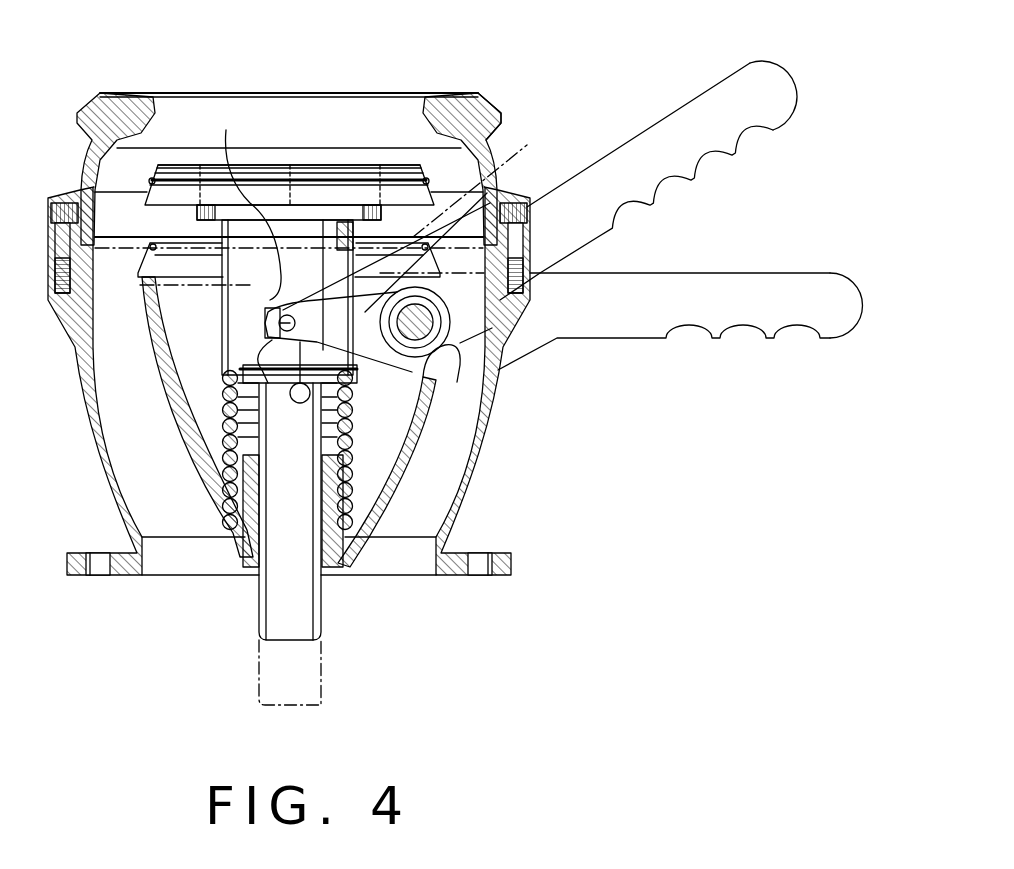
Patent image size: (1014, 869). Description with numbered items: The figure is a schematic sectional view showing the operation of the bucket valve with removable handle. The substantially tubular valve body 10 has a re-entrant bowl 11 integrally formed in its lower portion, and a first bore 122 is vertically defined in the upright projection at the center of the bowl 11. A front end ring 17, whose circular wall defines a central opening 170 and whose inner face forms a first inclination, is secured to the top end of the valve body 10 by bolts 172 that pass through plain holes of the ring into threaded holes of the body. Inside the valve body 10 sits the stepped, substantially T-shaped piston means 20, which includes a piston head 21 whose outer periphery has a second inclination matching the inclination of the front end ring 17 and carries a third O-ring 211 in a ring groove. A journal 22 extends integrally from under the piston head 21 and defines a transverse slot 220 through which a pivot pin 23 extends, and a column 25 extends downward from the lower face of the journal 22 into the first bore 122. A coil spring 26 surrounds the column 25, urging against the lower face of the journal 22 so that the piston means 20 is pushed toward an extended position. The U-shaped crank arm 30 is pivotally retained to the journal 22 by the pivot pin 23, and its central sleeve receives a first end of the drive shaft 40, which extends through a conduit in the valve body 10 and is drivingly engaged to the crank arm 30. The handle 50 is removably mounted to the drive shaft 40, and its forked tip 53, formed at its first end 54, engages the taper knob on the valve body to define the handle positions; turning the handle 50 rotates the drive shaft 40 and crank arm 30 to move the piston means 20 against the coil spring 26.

The valve body 10 is at (465, 500).
The re-entrant bowl 11 is at (372, 520).
The first bore 122 is at (338, 558).
The front end ring 17 is at (490, 112).
The opening 170 is at (412, 112).
The bolts 172 is at (62, 210).
The piston means 20 is at (360, 166).
The piston head 21 is at (291, 186).
The third O-ring 211 is at (171, 172).
The journal 22 is at (153, 277).
The transverse slot 220 is at (270, 312).
The pivot pin 23 is at (260, 345).
The column 25 is at (268, 588).
The coil spring 26 is at (353, 465).
The crank arm 30 is at (427, 378).
The drive shaft 40 is at (427, 380).
The handle 50 is at (668, 132).
The forked tip 53 is at (369, 199).
The first end 54 is at (227, 410).